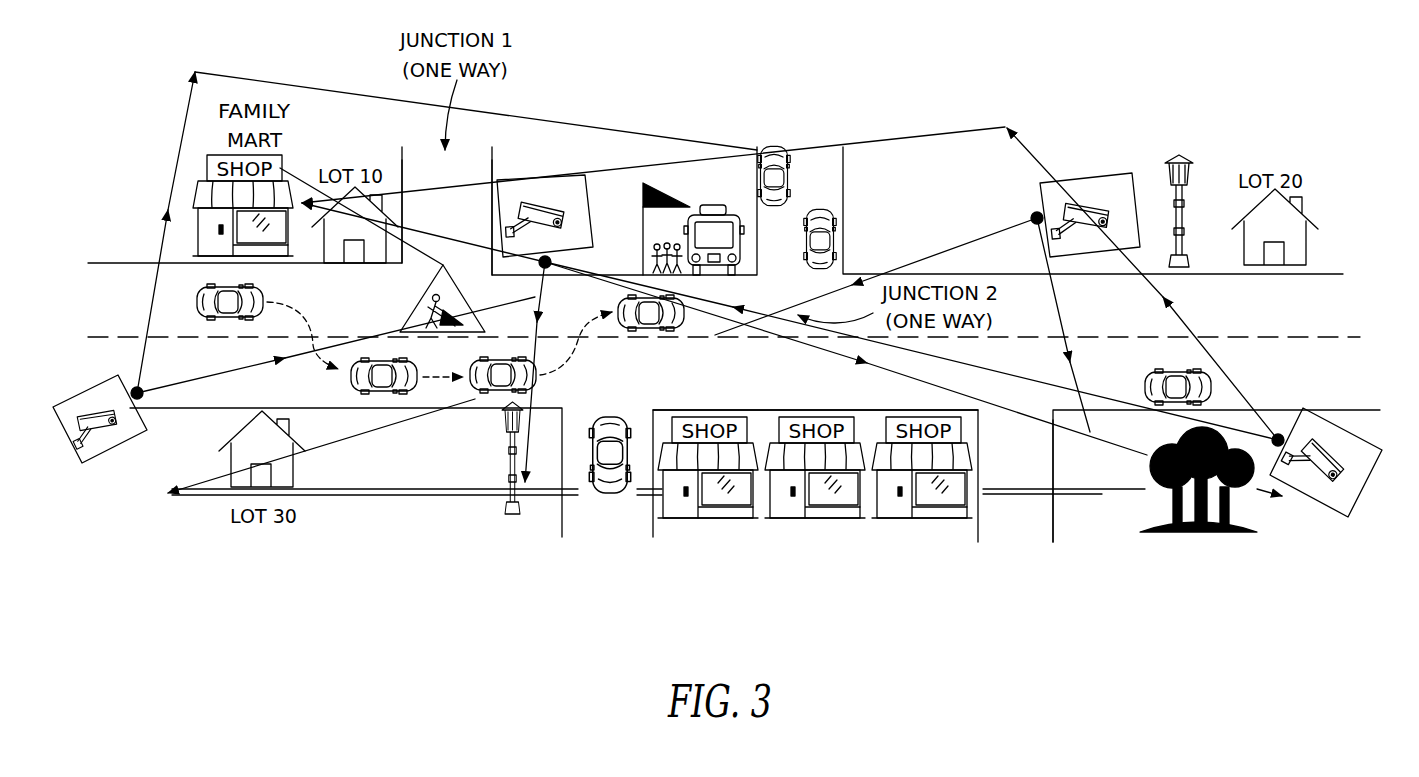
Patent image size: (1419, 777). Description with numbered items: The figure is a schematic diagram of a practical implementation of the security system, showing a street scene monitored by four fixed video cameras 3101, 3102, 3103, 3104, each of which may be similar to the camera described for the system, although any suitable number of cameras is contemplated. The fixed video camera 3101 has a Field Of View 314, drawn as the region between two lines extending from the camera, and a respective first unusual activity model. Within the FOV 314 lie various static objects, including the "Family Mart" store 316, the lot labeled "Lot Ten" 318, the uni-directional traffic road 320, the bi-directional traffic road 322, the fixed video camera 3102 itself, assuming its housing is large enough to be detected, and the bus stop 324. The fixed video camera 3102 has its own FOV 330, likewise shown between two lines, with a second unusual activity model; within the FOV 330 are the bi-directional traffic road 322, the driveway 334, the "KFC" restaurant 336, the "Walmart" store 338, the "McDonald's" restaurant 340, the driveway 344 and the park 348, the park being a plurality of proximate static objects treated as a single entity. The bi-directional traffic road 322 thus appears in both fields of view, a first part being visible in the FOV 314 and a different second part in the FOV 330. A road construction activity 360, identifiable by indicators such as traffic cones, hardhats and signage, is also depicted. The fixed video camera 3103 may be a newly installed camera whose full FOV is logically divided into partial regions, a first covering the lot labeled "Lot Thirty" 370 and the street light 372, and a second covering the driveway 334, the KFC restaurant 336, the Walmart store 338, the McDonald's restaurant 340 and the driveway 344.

The Field Of View 314 is at (200, 137).
The "Family Mart" store 316 is at (195, 188).
The "Lot 10" 318 is at (378, 212).
The uni-directional traffic road 320 is at (462, 213).
The bi-directional traffic road 322 is at (168, 310).
The bus stop 324 is at (712, 173).
The FOV 330 is at (838, 382).
The driveway 334 is at (643, 508).
The "KFC" restaurant 336 is at (708, 522).
The "Walmart" store 338 is at (815, 520).
The "McDonald's" restaurant 340 is at (950, 523).
The driveway 344 is at (1030, 460).
The park 348 is at (1277, 510).
The road construction activity 360 is at (420, 306).
The "Lot 30" 370 is at (297, 463).
The street light 372 is at (505, 462).
The fixed video camera 3101 is at (66, 440).
The fixed video camera 3102 is at (594, 197).
The fixed video camera 3103 is at (1088, 176).
The fixed video camera 3104 is at (1368, 487).